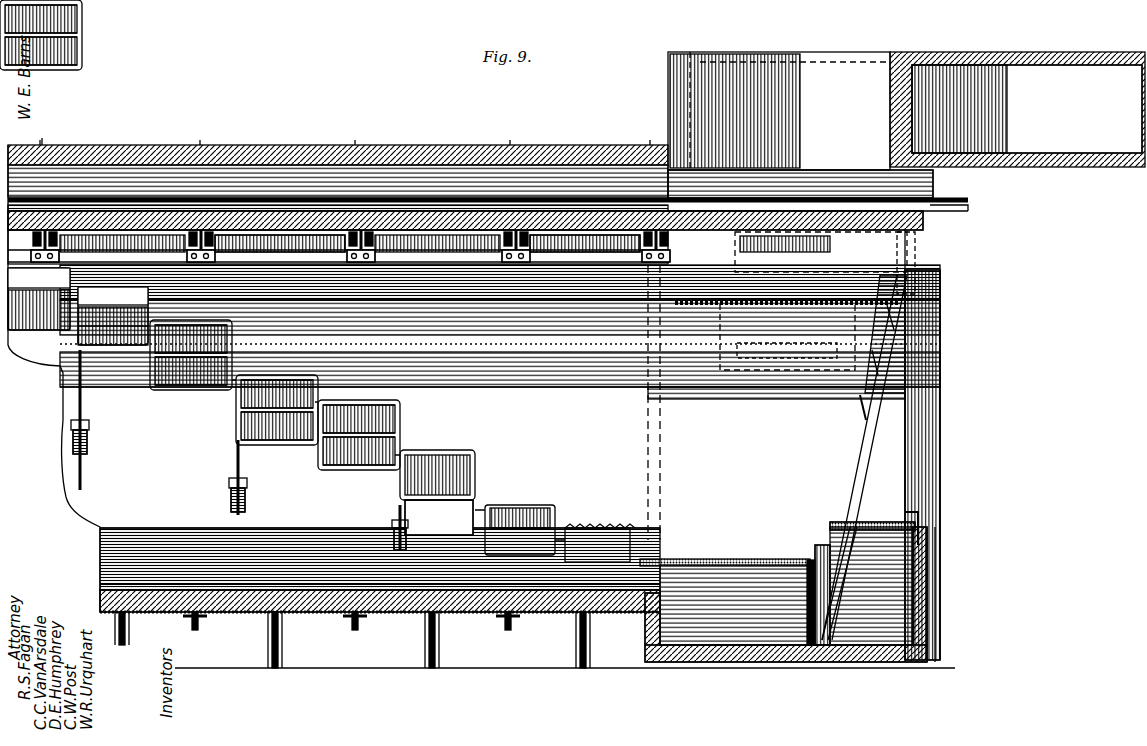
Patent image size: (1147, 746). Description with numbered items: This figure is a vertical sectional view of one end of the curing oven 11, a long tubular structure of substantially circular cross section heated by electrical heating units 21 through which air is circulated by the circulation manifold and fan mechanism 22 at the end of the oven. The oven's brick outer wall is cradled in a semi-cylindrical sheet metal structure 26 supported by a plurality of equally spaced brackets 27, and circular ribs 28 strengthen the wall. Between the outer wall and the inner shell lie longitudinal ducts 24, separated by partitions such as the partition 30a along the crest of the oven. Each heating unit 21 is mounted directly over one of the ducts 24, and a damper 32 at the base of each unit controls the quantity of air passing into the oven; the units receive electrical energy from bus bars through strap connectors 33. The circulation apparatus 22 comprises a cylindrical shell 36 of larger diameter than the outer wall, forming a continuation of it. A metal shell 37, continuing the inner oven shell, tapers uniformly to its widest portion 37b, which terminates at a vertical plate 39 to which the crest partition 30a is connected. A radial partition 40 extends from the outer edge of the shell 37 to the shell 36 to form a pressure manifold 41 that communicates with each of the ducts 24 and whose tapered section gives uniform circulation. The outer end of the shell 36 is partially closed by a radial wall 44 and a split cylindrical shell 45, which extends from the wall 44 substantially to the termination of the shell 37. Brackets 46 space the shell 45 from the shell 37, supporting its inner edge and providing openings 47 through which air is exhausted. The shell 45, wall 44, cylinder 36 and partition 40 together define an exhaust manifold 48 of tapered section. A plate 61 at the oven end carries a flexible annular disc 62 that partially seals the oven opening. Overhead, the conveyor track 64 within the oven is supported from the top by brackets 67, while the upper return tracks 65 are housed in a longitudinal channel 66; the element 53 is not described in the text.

The curing oven 11 is at (532, 407).
The electrical heating units 21 is at (182, 392).
The circulation manifold and fan mechanism 22 is at (757, 60).
The longitudinal ducts 24 is at (470, 582).
The semi-cylindrical structure 26 is at (388, 613).
The brackets 27 is at (132, 636).
The circular ribs 28 is at (350, 626).
The longitudinal duct partition 30a is at (568, 263).
The damper 32 is at (240, 401).
The strap connectors 33 is at (88, 463).
The cylindrical shell 36 is at (770, 660).
The metal shell 37 is at (787, 393).
The widest portion of metal shell 37b is at (821, 252).
The vertical plate 39 is at (912, 246).
The radial partition 40 is at (800, 572).
The pressure manifold 41 is at (725, 602).
The radial wall 44 is at (942, 585).
The split cylindrical shell 45 is at (908, 403).
The brackets 46 is at (850, 371).
The openings 47 is at (838, 430).
The exhaust manifold 48 is at (867, 586).
The upper end casing 53 is at (997, 62).
The plate 61 is at (940, 530).
The flexible annular disc 62 is at (946, 512).
The conveyor track 64 is at (460, 262).
The upper tracks 65 is at (962, 206).
The longitudinal channel 66 is at (247, 150).
The brackets 67 is at (336, 248).